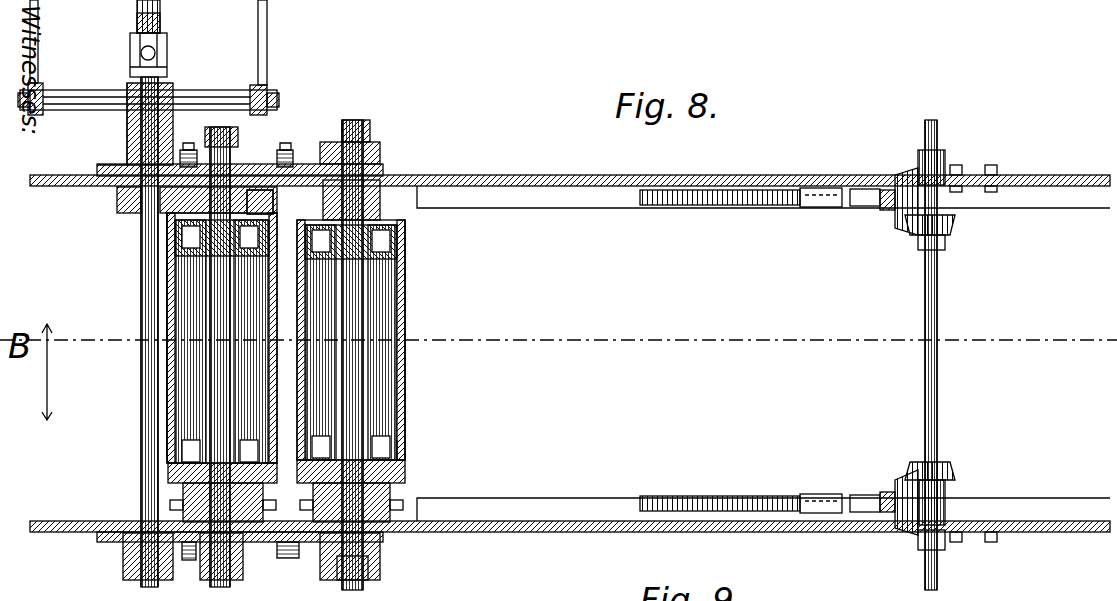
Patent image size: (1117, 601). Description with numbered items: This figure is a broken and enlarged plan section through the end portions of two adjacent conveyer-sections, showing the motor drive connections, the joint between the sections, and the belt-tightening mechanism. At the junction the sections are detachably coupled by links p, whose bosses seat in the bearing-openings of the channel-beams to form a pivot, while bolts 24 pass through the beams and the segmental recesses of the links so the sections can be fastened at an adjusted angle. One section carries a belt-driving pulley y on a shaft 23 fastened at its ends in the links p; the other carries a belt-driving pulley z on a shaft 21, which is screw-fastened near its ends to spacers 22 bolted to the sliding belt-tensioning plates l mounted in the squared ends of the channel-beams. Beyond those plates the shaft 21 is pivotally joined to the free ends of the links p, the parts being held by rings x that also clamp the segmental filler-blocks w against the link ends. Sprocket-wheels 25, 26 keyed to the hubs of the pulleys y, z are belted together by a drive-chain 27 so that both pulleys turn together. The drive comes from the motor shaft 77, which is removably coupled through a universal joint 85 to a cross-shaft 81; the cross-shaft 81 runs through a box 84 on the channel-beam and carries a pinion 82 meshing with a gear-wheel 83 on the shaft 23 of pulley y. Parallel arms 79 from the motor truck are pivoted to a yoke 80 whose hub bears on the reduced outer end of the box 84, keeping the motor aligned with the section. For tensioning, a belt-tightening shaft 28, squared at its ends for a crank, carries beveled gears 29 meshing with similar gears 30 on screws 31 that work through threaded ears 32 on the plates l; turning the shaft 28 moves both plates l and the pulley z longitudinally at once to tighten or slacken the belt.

The spacers 22 is at (380, 183).
The sliding belt-tensioning plates l is at (555, 195).
The links p is at (300, 164).
The parallel arms 79 is at (37, 57).
The yoke 80 is at (148, 84).
The shaft 77 is at (140, 24).
The universal joint 85 is at (160, 45).
The cross-shaft 81 is at (141, 280).
The box 84 is at (127, 140).
The pinion 82 is at (125, 213).
The shaft 23 is at (215, 372).
The belt-driving pulley y is at (167, 318).
The gear-wheel 83 is at (273, 202).
The sprocket-wheel 25 is at (172, 502).
The bolts 24 is at (290, 152).
The shaft 21 is at (355, 292).
The belt-driving pulley z is at (405, 330).
The drive-chain 27 is at (405, 462).
The sprocket-wheel 26 is at (400, 504).
The rings x is at (380, 145).
The segmental filler-blocks w is at (448, 549).
The screws 31 is at (750, 205).
The threaded ears 32 is at (822, 207).
The beveled gears 30 is at (890, 212).
The beveled gears 29 is at (952, 225).
The belt-tightening shaft 28 is at (937, 318).